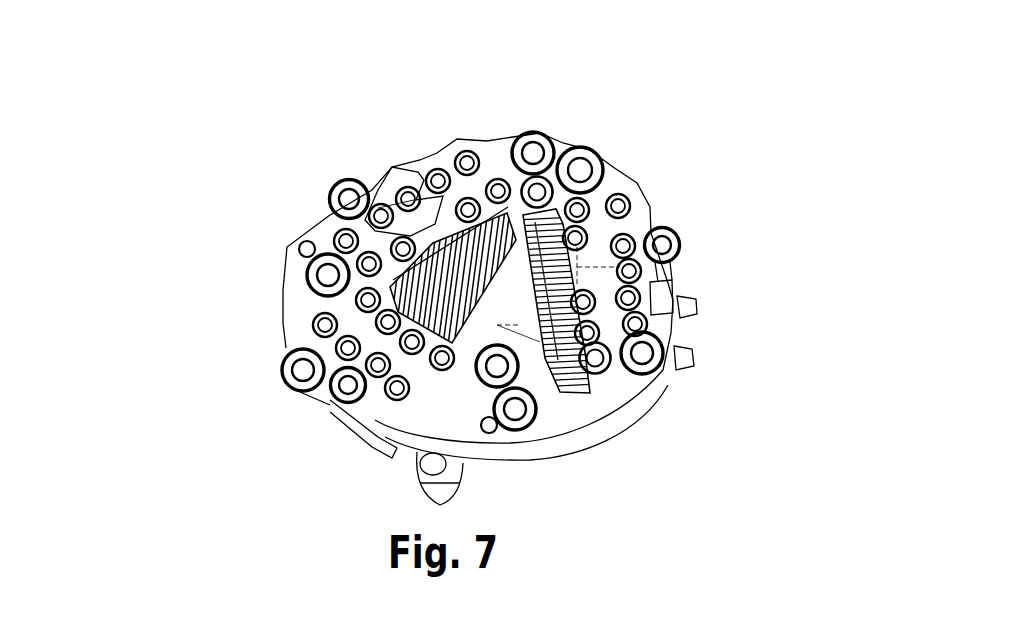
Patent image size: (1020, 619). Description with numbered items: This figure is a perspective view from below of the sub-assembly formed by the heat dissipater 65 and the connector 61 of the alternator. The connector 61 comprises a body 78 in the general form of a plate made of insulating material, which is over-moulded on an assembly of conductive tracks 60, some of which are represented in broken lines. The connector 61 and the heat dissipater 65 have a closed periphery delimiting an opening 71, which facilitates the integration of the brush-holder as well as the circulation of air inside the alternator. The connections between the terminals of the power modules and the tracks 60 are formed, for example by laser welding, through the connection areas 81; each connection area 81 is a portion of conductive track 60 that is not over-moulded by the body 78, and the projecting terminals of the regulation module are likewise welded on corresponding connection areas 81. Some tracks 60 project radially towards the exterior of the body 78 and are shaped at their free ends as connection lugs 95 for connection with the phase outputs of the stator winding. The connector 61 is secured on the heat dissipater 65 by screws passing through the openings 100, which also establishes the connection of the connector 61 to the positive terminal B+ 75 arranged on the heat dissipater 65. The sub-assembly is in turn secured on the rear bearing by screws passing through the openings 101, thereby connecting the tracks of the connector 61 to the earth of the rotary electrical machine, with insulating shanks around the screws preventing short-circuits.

The tracks 60 is at (395, 200).
The connector 61 is at (266, 299).
The heat dissipater 65 is at (366, 472).
The opening 71 is at (583, 335).
The positive terminal B+ 75 is at (480, 488).
The body 78 is at (486, 157).
The connection area 81 is at (650, 228).
The connection lugs 95 is at (695, 355).
The openings 100 is at (330, 188).
The openings 101 is at (593, 153).